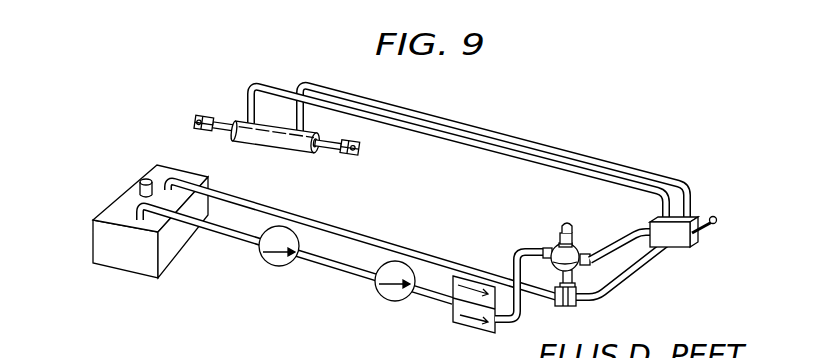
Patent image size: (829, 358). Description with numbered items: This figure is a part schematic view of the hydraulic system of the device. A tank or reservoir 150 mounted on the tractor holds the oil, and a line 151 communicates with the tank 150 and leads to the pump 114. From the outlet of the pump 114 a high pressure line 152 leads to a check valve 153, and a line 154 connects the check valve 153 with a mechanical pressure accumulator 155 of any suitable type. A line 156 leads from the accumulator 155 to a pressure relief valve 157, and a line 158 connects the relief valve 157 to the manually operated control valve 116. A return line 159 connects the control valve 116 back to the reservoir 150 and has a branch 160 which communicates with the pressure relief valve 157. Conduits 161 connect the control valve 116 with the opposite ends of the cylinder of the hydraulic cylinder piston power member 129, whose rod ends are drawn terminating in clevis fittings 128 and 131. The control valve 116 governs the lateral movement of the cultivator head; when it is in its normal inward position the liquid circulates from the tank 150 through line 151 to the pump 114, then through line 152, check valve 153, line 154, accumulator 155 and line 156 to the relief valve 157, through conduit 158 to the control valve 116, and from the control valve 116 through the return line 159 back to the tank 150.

The pump 114 is at (288, 261).
The manually operated control valve 116 is at (682, 247).
The piston rod clevis 128 is at (342, 166).
The hydraulic cylinder piston power member 129 is at (281, 142).
The cylinder end clevis 131 is at (214, 124).
The tank or reservoir 150 is at (129, 252).
The line 151 is at (222, 230).
The high pressure line 152 is at (296, 258).
The check valve 153 is at (392, 300).
The line 154 is at (440, 300).
The mechanical pressure accumulator 155 is at (482, 328).
The line 156 is at (513, 246).
The pressure relief valve 157 is at (556, 243).
The line 158 is at (618, 243).
The return line 159 is at (388, 226).
The branch 160 is at (604, 290).
The conduits 161 is at (537, 151).